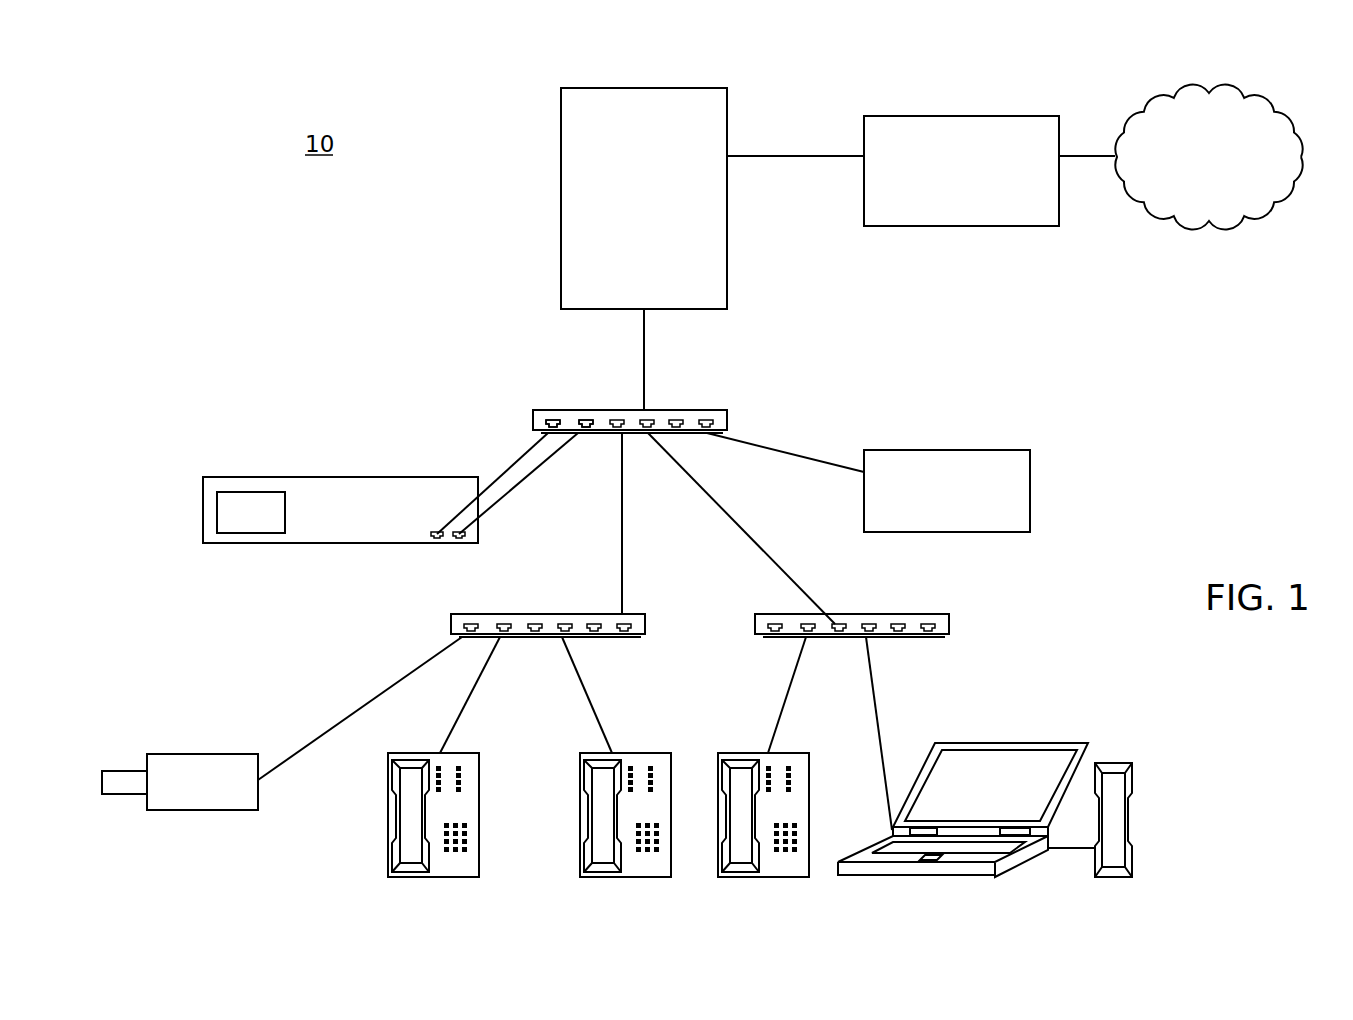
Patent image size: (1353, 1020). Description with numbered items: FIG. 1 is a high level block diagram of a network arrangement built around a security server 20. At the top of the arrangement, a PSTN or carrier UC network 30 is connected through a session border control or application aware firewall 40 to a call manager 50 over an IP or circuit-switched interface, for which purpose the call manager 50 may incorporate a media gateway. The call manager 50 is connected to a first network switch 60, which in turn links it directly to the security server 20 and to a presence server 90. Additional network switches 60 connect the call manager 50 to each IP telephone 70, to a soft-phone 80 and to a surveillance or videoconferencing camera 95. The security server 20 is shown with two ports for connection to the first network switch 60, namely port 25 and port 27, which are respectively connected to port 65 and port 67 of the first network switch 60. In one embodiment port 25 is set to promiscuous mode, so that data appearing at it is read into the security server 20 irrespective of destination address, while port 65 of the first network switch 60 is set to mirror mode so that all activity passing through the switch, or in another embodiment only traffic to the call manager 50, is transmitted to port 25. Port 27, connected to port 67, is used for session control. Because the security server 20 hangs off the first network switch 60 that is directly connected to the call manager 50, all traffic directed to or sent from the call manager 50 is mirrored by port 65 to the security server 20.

The security server 20 is at (340, 543).
The port 25 is at (436, 540).
The port 27 is at (460, 540).
The PSTN or carrier UC network 30 is at (1209, 224).
The session border control or application aware firewall 40 is at (973, 226).
The call manager 50 is at (727, 225).
The network switch 60 is at (727, 422).
The port 65 is at (556, 418).
The port 67 is at (585, 418).
The IP telephone 70 is at (460, 753).
The soft-phone 80 is at (1020, 857).
The presence server 90 is at (947, 450).
The surveillance or videoconferencing camera 95 is at (202, 754).